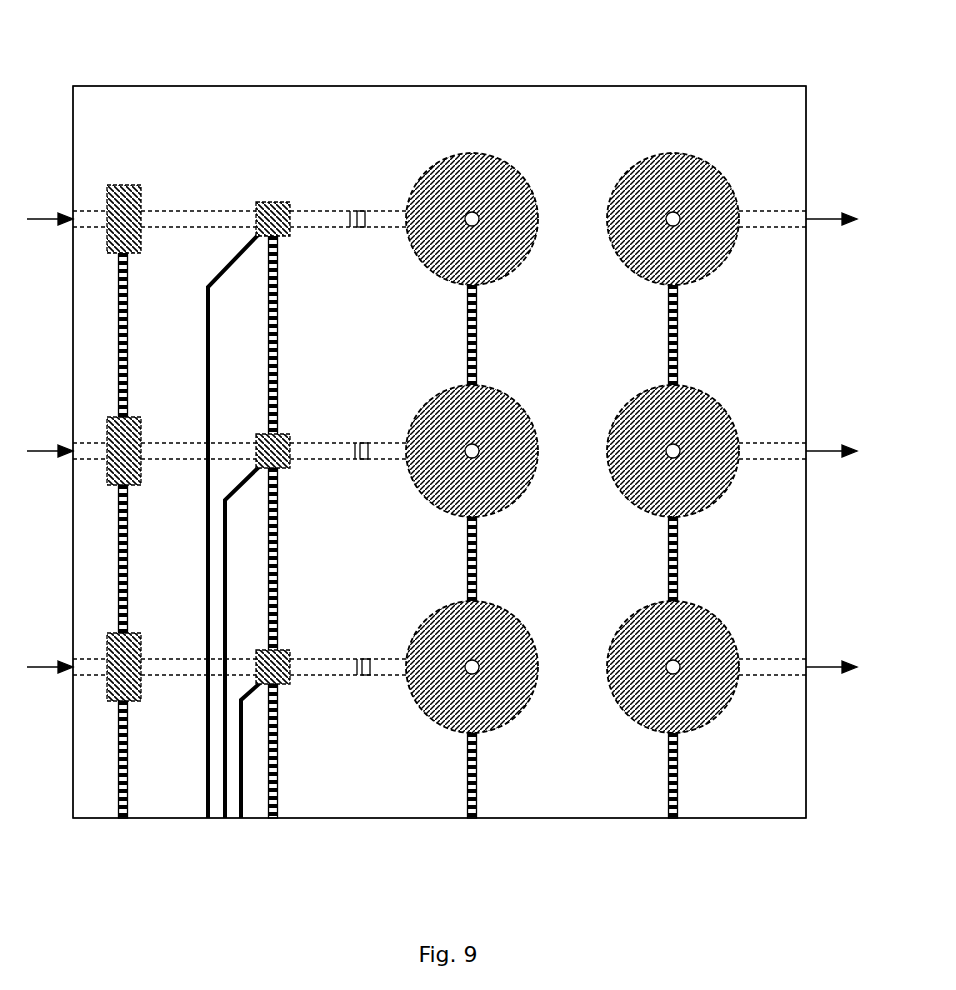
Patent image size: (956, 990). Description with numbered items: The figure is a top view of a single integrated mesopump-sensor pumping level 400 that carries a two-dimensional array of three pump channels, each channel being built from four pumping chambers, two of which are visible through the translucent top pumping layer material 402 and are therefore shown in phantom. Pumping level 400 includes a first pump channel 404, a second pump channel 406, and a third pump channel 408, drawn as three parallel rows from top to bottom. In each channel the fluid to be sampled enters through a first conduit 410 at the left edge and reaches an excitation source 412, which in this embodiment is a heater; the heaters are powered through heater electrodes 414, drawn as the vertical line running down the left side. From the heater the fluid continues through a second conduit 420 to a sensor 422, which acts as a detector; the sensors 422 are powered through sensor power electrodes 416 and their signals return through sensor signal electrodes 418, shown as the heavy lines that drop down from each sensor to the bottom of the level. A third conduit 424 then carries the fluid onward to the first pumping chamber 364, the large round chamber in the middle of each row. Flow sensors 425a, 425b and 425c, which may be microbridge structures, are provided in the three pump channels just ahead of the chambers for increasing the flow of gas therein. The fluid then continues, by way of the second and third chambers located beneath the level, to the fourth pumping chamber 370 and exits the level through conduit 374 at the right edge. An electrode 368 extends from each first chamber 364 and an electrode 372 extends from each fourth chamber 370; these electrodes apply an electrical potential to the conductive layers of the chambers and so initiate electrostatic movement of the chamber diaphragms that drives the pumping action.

The integrated mesopump-sensor pumping level 400 is at (390, 86).
The translucent top pumping layer material 402 is at (203, 123).
The first pump channel 404 is at (828, 631).
The second pump channel 406 is at (830, 413).
The third pump channel 408 is at (830, 185).
The first conduit 410 is at (93, 211).
The excitation source 412 is at (108, 236).
The heater electrodes 414 is at (123, 545).
The sensor power electrodes 416 is at (277, 798).
The sensor signal electrodes 418 is at (239, 820).
The second conduit 420 is at (213, 216).
The sensor 422 is at (288, 204).
The third conduit 424 is at (312, 227).
The flow sensor 425a is at (362, 211).
The flow sensor 425b is at (365, 443).
The flow sensor 425c is at (368, 659).
The first pumping chamber 364 is at (478, 173).
The electrode 368 is at (470, 785).
The fourth pumping chamber 370 is at (670, 178).
The electrode 372 is at (678, 800).
The fluid conduit 374 is at (767, 216).